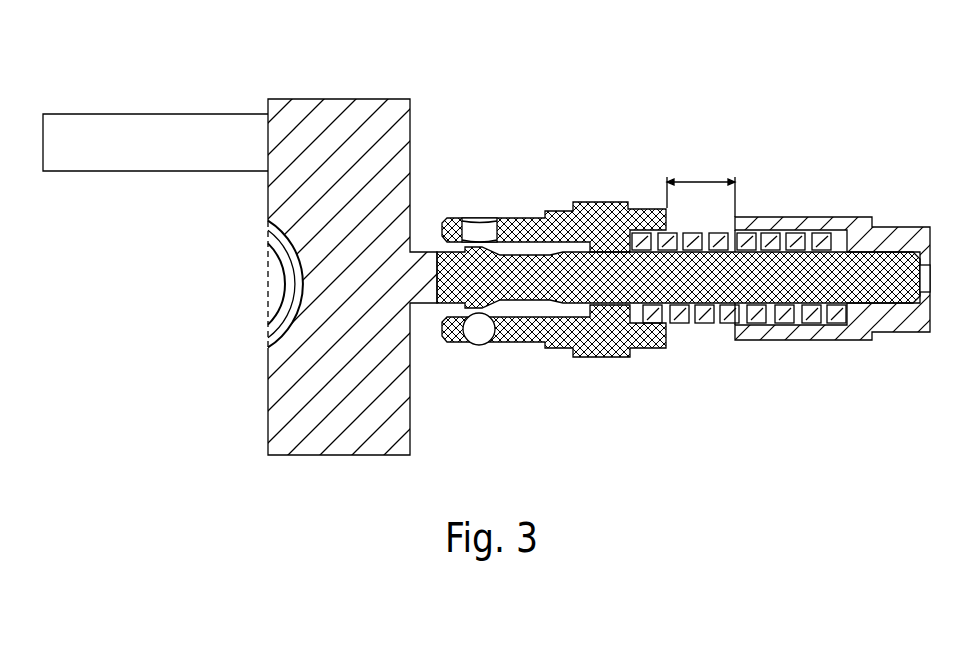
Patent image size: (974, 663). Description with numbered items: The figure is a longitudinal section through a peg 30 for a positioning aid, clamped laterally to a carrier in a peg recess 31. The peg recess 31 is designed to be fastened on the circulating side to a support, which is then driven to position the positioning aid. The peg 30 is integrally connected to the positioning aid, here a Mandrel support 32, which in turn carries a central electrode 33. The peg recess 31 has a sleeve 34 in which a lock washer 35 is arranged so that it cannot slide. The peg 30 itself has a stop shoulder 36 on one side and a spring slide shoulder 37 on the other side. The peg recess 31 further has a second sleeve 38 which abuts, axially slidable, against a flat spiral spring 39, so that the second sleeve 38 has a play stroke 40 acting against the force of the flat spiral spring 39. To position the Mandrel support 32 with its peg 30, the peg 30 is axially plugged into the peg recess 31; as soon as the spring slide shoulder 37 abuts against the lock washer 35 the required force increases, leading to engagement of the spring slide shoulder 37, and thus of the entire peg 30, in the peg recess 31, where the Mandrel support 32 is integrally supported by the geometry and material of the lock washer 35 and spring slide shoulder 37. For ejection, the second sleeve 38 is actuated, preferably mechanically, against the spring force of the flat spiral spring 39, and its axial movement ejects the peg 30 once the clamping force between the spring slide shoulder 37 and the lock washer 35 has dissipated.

The peg 30 is at (768, 262).
The peg recess 31 is at (781, 228).
The Mandrel support 32 is at (343, 110).
The central electrode 33 is at (151, 134).
The sleeve 34 is at (554, 187).
The lock washer 35 is at (480, 336).
The stop shoulder 36 is at (552, 366).
The spring slide shoulder 37 is at (480, 246).
The second sleeve 38 is at (880, 247).
The flat spiral spring 39 is at (745, 200).
The play stroke 40 is at (698, 180).